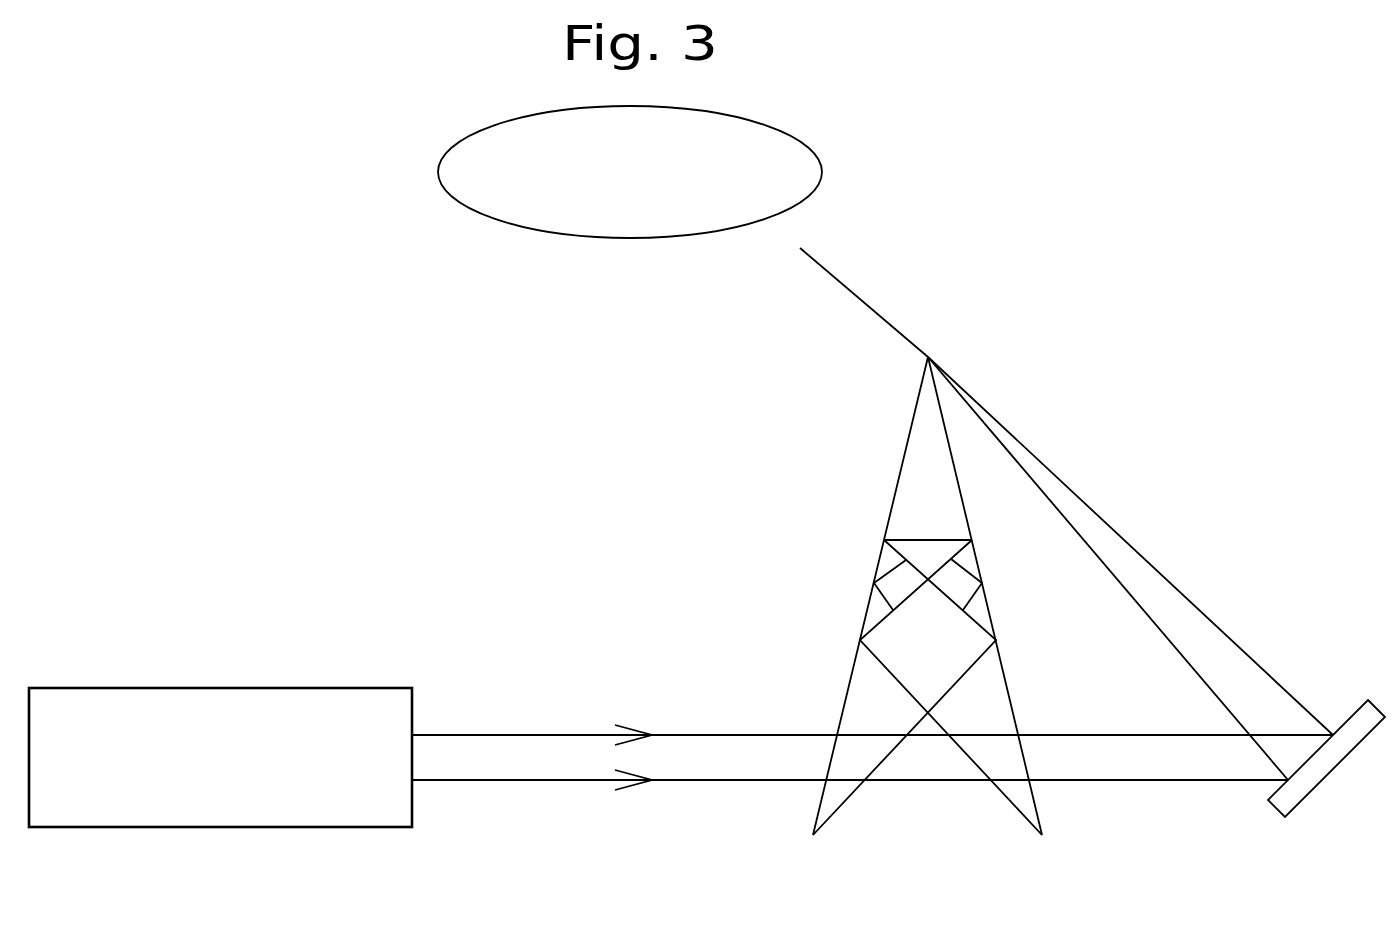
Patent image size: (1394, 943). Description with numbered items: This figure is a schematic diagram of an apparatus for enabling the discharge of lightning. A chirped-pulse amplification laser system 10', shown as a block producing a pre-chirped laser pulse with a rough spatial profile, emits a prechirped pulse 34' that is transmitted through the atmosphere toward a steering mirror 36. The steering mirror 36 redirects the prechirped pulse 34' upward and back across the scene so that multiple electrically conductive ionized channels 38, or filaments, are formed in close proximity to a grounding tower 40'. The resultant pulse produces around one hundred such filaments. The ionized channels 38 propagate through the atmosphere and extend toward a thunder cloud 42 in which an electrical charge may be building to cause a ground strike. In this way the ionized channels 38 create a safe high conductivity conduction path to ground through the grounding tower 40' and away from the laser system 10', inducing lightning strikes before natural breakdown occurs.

The thunder cloud 42 is at (594, 238).
The electrically conductive ionized channels 38 is at (848, 293).
The grounding tower 40' is at (854, 596).
The prechirped pulse 34' is at (872, 573).
The chirped-pulse amplification laser system 10' is at (220, 715).
The steering mirror 36 is at (1350, 710).